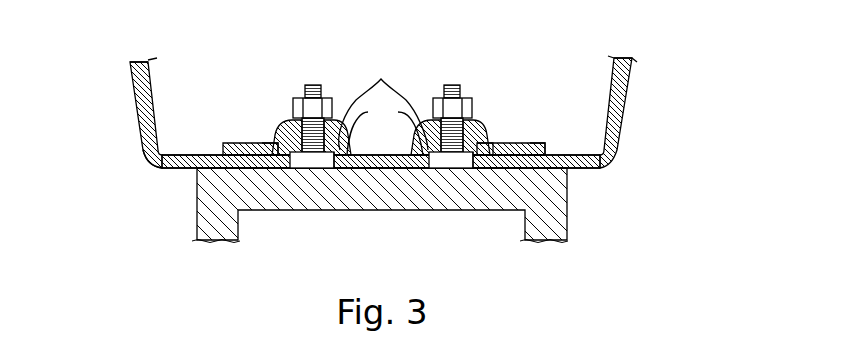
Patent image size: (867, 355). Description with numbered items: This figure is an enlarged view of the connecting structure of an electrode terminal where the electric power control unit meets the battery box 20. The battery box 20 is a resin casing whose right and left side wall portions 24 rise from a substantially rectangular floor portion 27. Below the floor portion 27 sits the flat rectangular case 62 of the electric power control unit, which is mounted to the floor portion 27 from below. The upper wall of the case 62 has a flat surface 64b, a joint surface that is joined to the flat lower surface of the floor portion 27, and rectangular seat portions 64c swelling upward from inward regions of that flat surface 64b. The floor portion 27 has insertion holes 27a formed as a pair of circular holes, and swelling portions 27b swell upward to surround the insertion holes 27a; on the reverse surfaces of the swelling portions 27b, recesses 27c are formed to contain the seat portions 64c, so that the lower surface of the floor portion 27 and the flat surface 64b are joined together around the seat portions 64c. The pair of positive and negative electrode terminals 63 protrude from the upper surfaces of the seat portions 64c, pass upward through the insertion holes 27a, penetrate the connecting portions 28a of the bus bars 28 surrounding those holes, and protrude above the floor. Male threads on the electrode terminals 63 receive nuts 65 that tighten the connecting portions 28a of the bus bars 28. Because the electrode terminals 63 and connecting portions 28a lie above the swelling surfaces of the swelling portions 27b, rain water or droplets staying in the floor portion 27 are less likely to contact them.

The battery box 20 is at (158, 163).
The side wall portion 24 is at (143, 123).
The floor portion 27 is at (590, 170).
The insertion hole 27a is at (330, 168).
The swelling portion 27b is at (385, 130).
The recess 27c is at (347, 168).
The bus bar 28 is at (226, 143).
The connecting portion 28a is at (383, 106).
The case 62 is at (568, 221).
The electrode terminal 63 is at (310, 85).
The flat surface 64b is at (566, 153).
The seat portion 64c is at (250, 143).
The nut 65 is at (332, 120).